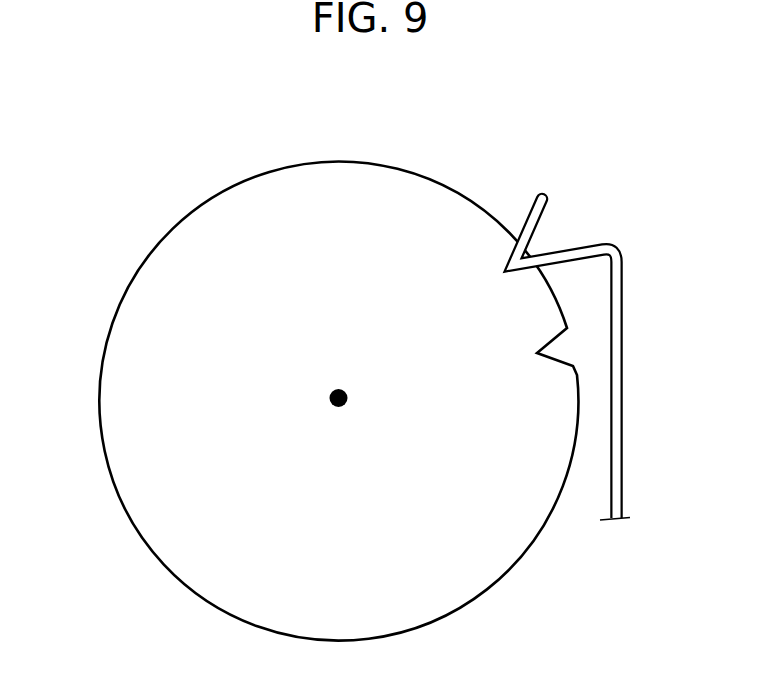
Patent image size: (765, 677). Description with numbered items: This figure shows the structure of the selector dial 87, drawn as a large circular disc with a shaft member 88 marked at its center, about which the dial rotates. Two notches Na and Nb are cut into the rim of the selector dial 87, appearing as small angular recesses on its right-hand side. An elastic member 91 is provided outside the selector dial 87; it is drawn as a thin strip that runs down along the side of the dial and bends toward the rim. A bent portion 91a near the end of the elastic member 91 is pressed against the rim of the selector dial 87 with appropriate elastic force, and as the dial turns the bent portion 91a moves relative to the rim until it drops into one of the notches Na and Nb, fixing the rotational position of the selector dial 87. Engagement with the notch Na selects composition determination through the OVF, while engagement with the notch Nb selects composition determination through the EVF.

The selector dial 87 is at (378, 160).
The shaft member 88 is at (331, 398).
The elastic member 91 is at (623, 335).
The bent portion 91a is at (523, 268).
The notch Na is at (520, 223).
The notch Nb is at (562, 347).